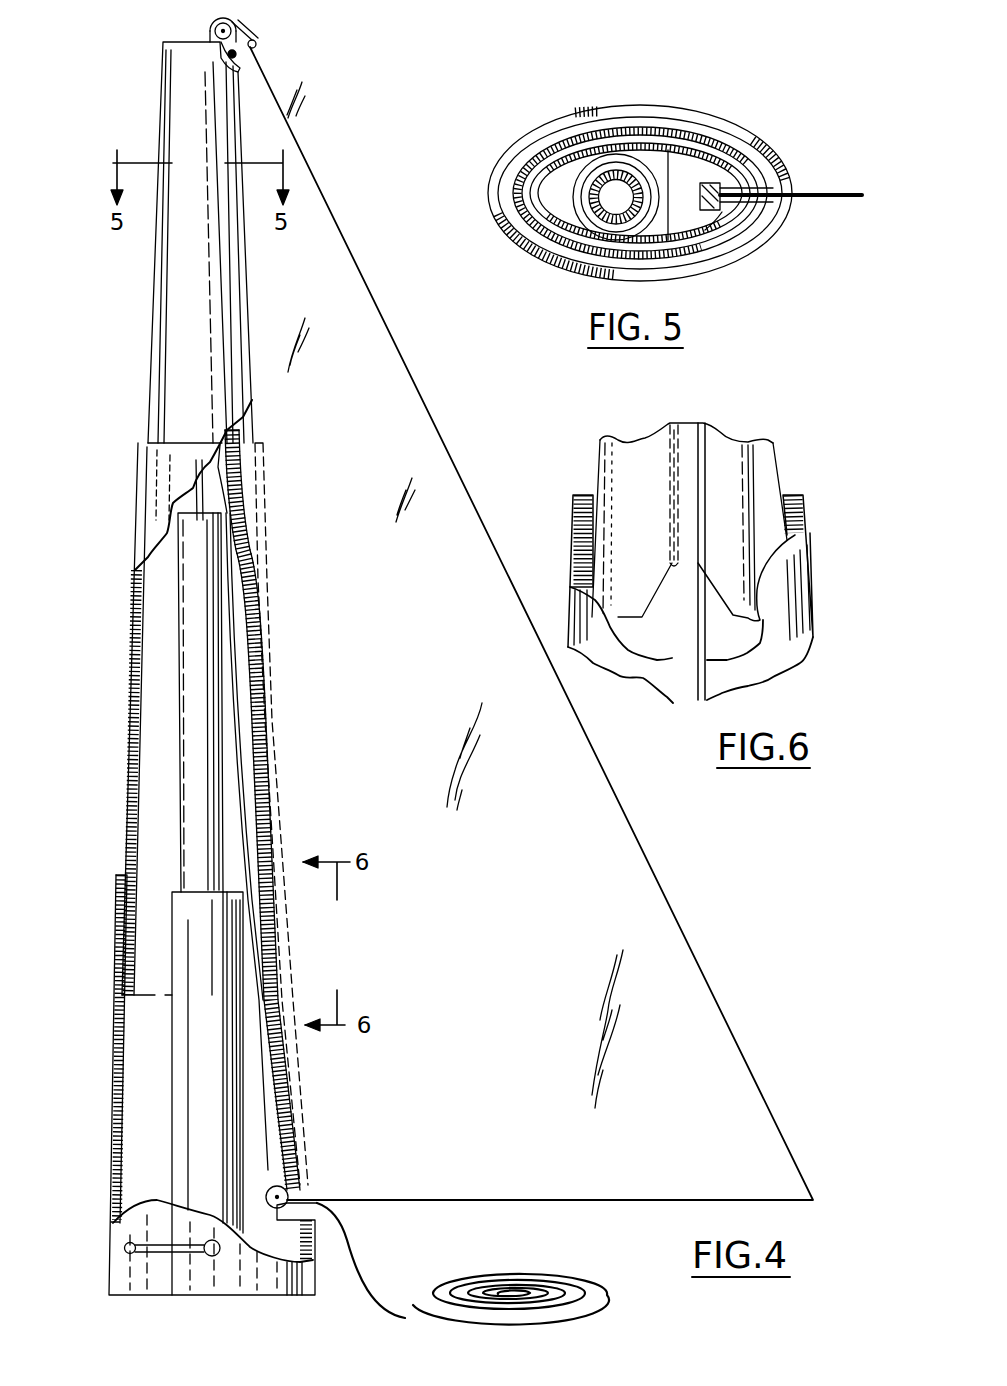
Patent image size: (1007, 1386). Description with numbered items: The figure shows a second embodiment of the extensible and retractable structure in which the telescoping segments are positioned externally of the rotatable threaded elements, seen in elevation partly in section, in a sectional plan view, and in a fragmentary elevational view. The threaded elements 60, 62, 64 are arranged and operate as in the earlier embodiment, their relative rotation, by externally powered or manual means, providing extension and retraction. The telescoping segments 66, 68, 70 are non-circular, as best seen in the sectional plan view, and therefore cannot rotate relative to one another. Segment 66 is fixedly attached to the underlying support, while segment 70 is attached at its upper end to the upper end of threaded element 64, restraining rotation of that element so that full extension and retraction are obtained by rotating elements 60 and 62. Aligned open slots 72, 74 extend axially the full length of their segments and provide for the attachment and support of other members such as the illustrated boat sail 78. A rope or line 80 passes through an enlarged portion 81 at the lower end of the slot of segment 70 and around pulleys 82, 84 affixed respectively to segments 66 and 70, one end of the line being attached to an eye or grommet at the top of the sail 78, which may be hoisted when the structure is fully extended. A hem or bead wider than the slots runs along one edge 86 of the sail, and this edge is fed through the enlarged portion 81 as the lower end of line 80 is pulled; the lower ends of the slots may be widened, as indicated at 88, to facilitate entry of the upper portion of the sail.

In FIG. 4, the threaded element 60 is at (183, 1153).
In FIG. 4, the threaded element 62 is at (183, 810).
In FIG. 4, the threaded element 64 is at (195, 490).
In FIG. 4, the telescoping segment 66 is at (113, 1097).
In FIG. 5, the telescoping segment 66 is at (490, 214).
In FIG. 6, the telescoping segment 66 is at (813, 617).
In FIG. 4, the telescoping segment 68 is at (132, 678).
In FIG. 5, the telescoping segment 68 is at (532, 167).
In FIG. 6, the telescoping segment 68 is at (601, 468).
In FIG. 4, the telescoping segment 70 is at (160, 358).
In FIG. 5, the telescoping segment 70 is at (548, 160).
In FIG. 6, the telescoping segment 70 is at (688, 650).
In FIG. 5, the open slot 72 is at (783, 172).
In FIG. 6, the open slot 72 is at (682, 518).
In FIG. 5, the open slot 74 is at (717, 140).
In FIG. 5, the boat sail 78 is at (843, 200).
In FIG. 4, the rope or line 80 is at (238, 725).
In FIG. 4, the enlarged portion 81 is at (305, 1198).
In FIG. 4, the pulley 82 is at (275, 1182).
In FIG. 4, the pulley 84 is at (236, 20).
In FIG. 4, the sail edge 86 is at (268, 667).
In FIG. 5, the sail edge 86 is at (710, 214).
In FIG. 6, the widened lower end of slot 88 is at (666, 608).